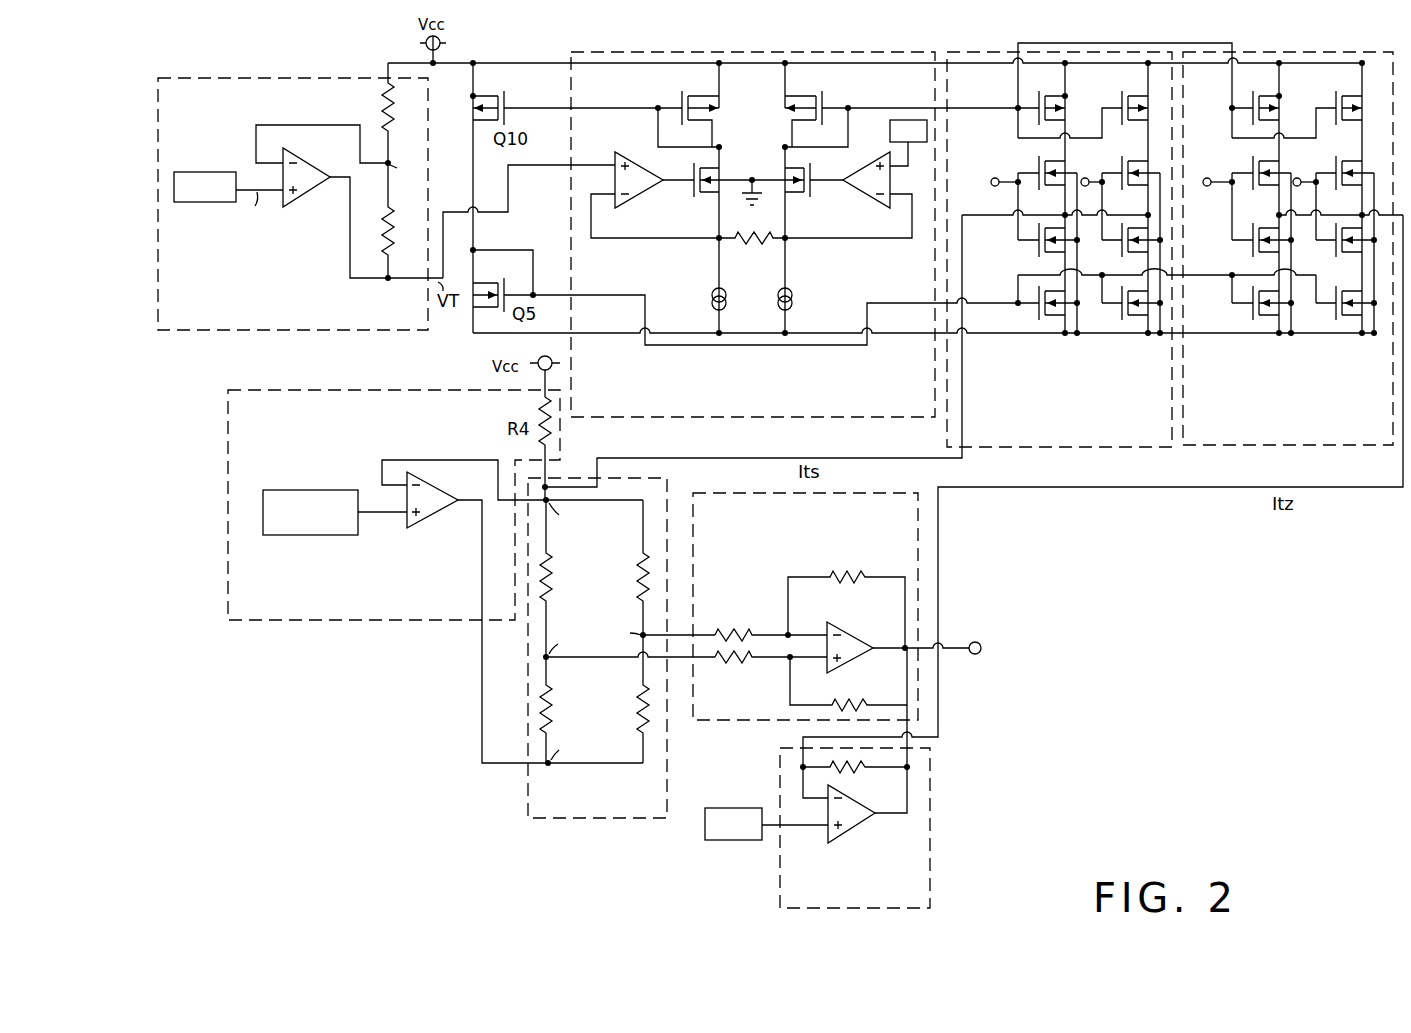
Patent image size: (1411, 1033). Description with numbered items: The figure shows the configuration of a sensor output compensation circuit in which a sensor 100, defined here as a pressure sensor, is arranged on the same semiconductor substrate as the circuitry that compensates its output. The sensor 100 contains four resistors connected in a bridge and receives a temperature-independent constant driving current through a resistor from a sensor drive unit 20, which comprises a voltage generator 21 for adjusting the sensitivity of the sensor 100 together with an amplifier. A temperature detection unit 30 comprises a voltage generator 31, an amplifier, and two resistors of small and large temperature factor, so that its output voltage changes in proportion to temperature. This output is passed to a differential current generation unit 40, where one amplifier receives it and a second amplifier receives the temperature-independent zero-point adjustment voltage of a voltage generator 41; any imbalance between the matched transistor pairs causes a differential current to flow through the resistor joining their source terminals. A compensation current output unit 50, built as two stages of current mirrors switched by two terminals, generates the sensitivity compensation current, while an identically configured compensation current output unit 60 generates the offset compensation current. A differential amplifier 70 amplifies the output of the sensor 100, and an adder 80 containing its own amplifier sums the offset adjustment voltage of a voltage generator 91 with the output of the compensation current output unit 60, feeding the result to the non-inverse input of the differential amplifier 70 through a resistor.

The sensor drive unit 20 is at (435, 576).
The voltage generator 21 is at (298, 490).
The temperature detection unit 30 is at (300, 212).
The voltage generator 31 is at (205, 172).
The differential current generation unit 40 is at (753, 250).
The voltage generator 41 is at (889, 133).
The compensation current output unit 50 is at (1060, 447).
The compensation current output unit 60 is at (1208, 446).
The differential amplifier 70 is at (752, 720).
The adder 80 is at (838, 806).
The voltage generator 91 is at (748, 842).
The sensor 100 is at (556, 818).